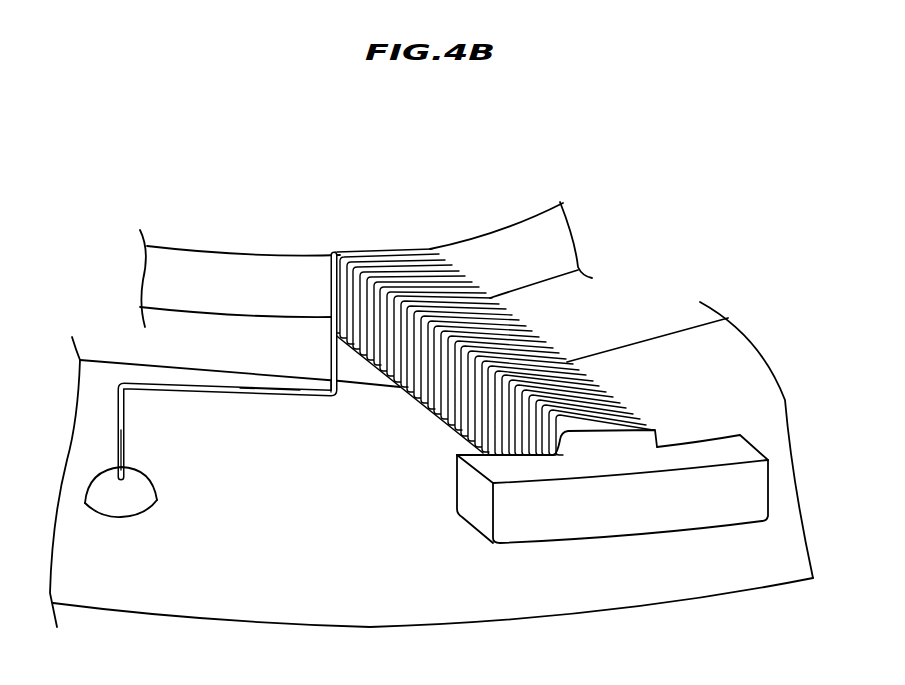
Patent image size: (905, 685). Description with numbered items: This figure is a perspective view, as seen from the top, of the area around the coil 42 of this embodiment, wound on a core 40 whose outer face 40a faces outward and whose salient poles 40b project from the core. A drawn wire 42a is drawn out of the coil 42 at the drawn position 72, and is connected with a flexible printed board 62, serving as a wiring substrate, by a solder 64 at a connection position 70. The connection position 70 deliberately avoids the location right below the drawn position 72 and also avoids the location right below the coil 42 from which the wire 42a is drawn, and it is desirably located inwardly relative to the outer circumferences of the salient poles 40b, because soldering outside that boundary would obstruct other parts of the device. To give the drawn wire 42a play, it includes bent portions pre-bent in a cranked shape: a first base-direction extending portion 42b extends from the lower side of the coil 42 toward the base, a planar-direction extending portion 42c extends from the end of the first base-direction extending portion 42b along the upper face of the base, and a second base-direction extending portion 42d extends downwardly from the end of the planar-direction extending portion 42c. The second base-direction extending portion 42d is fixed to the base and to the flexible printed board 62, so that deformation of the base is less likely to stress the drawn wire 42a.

The core 40 is at (507, 247).
The side surface of core member 40a is at (556, 268).
The salient pole 40b is at (700, 443).
The coil 42 is at (603, 383).
The drawn wire 42a is at (338, 392).
The first base-direction extending portion 42b is at (329, 362).
The planar-direction extending portion 42c is at (262, 397).
The second base-direction extending portion 42d is at (126, 415).
The flexible printed board 62 is at (103, 382).
The solder 64 is at (140, 478).
The connection position 70 is at (110, 480).
The drawn position 72 is at (324, 327).